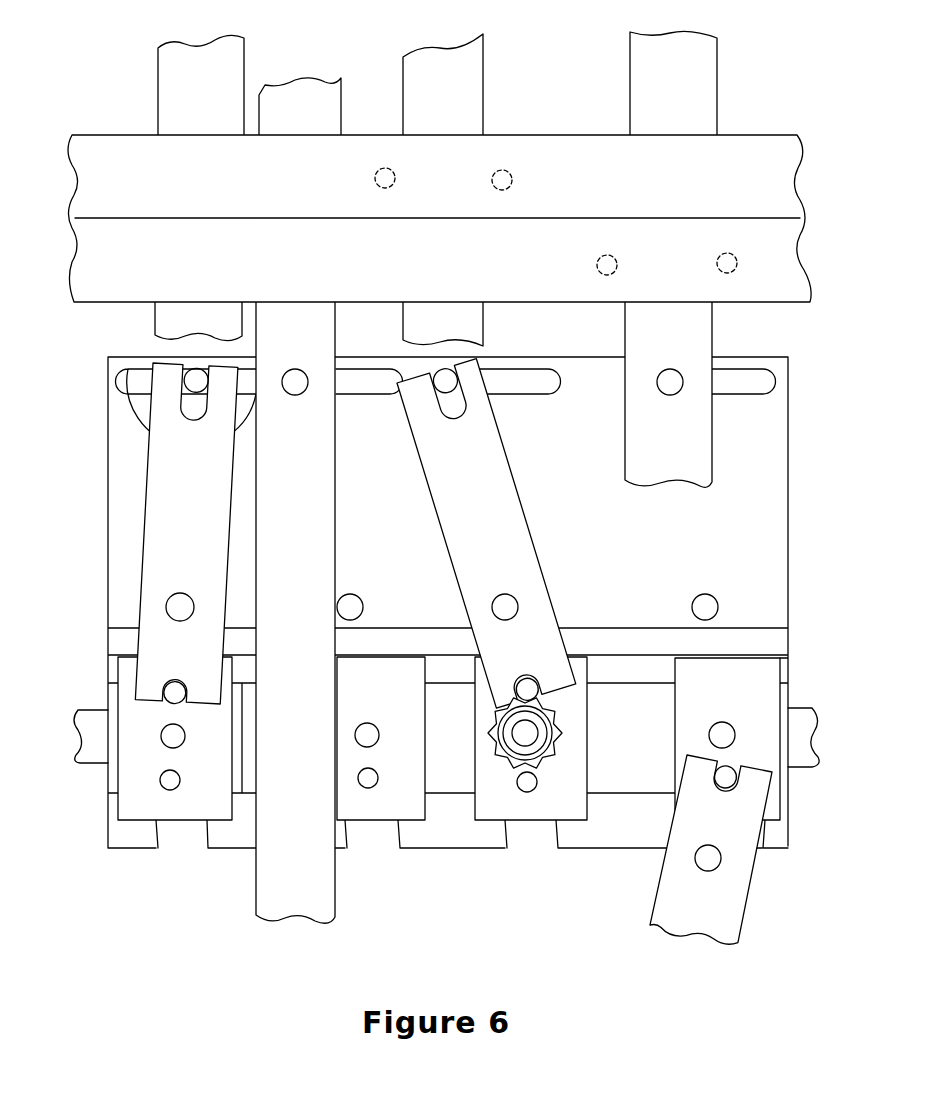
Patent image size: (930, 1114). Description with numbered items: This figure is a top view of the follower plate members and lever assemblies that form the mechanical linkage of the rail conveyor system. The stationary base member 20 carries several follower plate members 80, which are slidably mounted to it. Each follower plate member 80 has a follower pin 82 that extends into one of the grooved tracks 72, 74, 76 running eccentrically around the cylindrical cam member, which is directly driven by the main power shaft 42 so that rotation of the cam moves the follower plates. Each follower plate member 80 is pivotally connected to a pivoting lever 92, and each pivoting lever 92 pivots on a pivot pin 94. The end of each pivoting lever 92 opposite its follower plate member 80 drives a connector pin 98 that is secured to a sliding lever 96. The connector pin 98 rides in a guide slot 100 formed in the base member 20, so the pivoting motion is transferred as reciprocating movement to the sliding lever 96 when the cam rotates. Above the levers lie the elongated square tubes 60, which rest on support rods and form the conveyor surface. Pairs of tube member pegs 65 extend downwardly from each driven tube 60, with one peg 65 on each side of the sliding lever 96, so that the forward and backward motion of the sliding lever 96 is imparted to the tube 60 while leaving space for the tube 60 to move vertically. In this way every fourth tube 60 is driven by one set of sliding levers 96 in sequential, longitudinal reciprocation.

The base member 20 is at (108, 560).
The main power shaft 42 is at (93, 760).
The elongated square tube 60 is at (111, 152).
The tube member peg 65 is at (390, 177).
The grooved track 72 is at (184, 836).
The grooved track 74 is at (389, 838).
The grooved track 76 is at (545, 838).
The follower plate member 80 is at (143, 802).
The follower pin 82 is at (185, 734).
The pivoting lever 92 is at (165, 503).
The pivot pin 94 is at (178, 602).
The sliding lever 96 is at (227, 71).
The connector pin 98 is at (293, 392).
The guide slot 100 is at (135, 393).